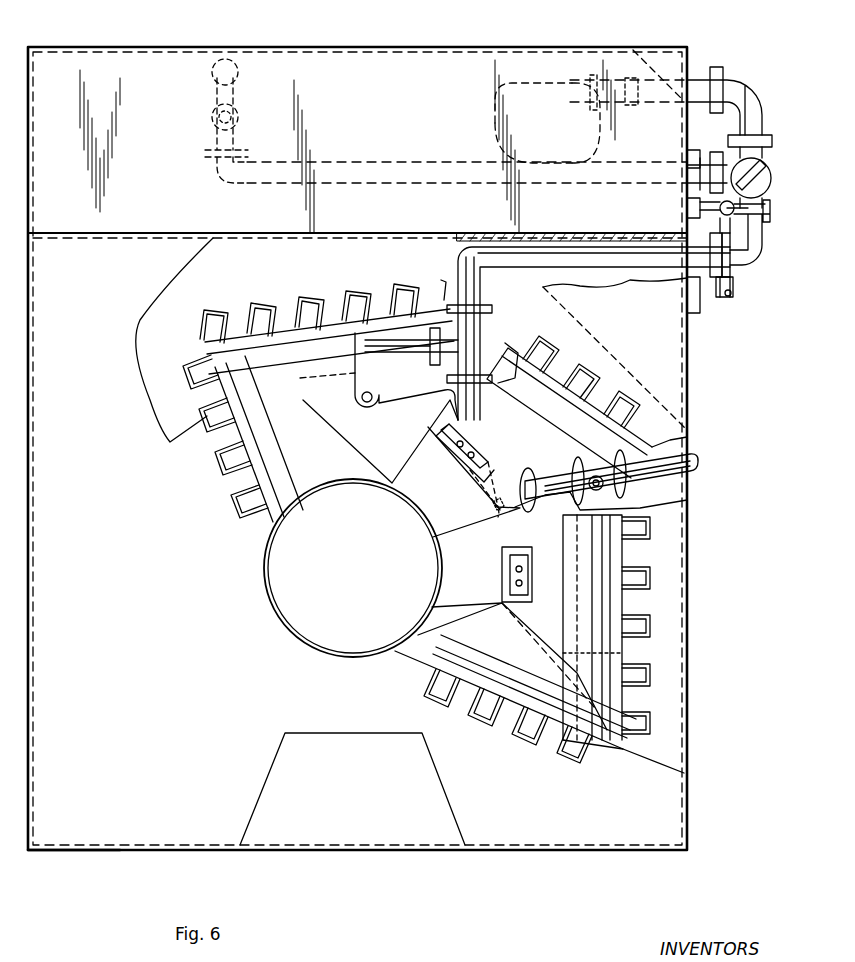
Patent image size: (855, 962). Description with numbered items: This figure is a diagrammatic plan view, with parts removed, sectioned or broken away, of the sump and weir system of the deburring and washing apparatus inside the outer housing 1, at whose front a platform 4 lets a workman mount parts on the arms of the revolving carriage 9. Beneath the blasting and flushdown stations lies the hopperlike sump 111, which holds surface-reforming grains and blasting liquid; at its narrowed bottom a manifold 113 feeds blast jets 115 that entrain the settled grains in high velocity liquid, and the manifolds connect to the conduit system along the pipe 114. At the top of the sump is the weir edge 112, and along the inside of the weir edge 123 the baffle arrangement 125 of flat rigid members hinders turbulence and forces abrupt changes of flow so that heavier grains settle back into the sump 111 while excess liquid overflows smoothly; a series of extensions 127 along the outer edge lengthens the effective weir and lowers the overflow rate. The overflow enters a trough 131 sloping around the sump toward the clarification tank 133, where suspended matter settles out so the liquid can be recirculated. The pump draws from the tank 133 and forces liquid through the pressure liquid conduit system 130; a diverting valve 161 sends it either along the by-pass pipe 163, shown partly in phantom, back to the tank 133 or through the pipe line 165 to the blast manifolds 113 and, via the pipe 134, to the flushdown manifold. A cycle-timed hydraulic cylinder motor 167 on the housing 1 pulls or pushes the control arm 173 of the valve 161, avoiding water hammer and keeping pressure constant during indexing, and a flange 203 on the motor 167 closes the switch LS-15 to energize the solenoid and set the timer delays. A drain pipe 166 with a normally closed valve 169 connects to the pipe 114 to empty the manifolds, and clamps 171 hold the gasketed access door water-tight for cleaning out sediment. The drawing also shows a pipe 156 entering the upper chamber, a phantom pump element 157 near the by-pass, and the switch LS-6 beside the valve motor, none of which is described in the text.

The housing 1 is at (86, 848).
The platform 4 is at (318, 845).
The revolving carriage 9 is at (358, 524).
The sump 111 is at (352, 439).
The weir edge 112 is at (236, 330).
The manifold 113 is at (476, 465).
The pipe 114 is at (495, 515).
The blast jets 115 is at (459, 453).
The weir edge 123 is at (648, 528).
The baffle arrangement 125 is at (268, 378).
The extensions 127 is at (402, 284).
The pressure liquid conduit system 130 is at (719, 43).
The trough 131 is at (289, 240).
The clarification tank 133 is at (104, 542).
The pipe 134 is at (412, 343).
The inlet pipe 156 is at (745, 100).
The pump 157 is at (540, 88).
The diverting valve 161 is at (770, 170).
The by-pass pipe 163 is at (383, 160).
The pipe line 165 is at (597, 268).
The drain pipe 166 is at (692, 462).
The hydraulic cylinder motor 167 is at (733, 270).
The valve 169 is at (596, 490).
The clamps 171 is at (735, 206).
The control arm 173 is at (690, 176).
The flange 203 is at (700, 202).
The switch LS-15 is at (685, 155).
The limit switch LS-6 is at (687, 213).